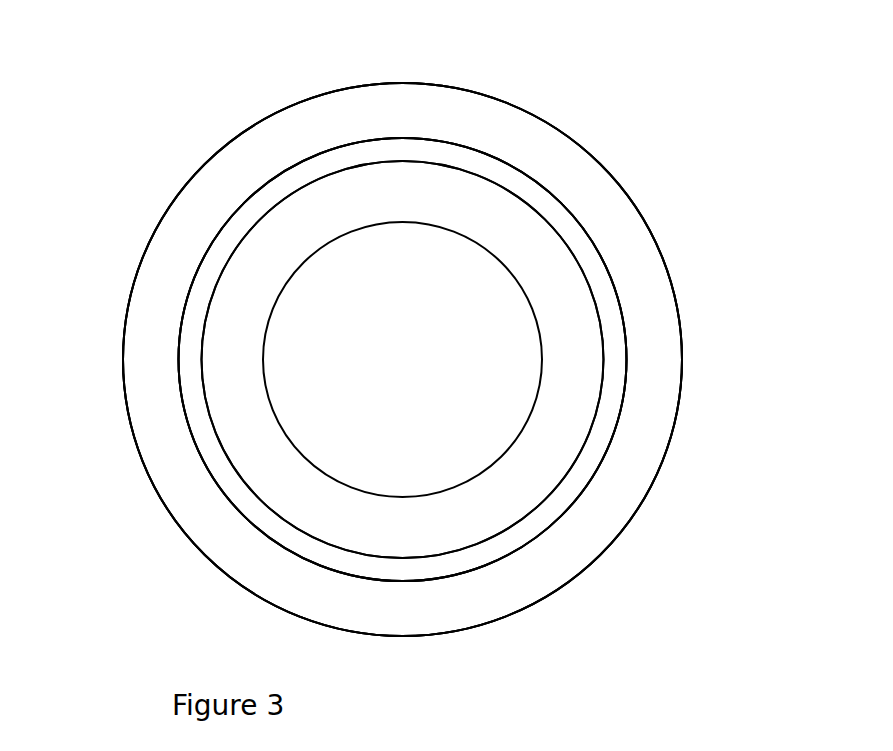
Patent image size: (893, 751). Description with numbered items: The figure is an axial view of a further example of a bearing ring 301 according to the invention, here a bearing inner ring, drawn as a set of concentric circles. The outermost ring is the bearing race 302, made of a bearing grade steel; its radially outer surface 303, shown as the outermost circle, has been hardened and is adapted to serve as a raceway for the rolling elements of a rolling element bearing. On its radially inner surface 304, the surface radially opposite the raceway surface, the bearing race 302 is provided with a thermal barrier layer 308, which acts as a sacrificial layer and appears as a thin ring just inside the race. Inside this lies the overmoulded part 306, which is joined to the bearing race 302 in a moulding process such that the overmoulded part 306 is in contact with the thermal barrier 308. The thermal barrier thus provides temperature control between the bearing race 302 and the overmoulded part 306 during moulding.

The bearing ring 301 is at (660, 133).
The bearing race 302 is at (598, 538).
The radially outer surface 303 is at (201, 561).
The radially inner surface 304 is at (195, 294).
The overmoulded part 306 is at (563, 399).
The thermal barrier layer 308 is at (600, 277).